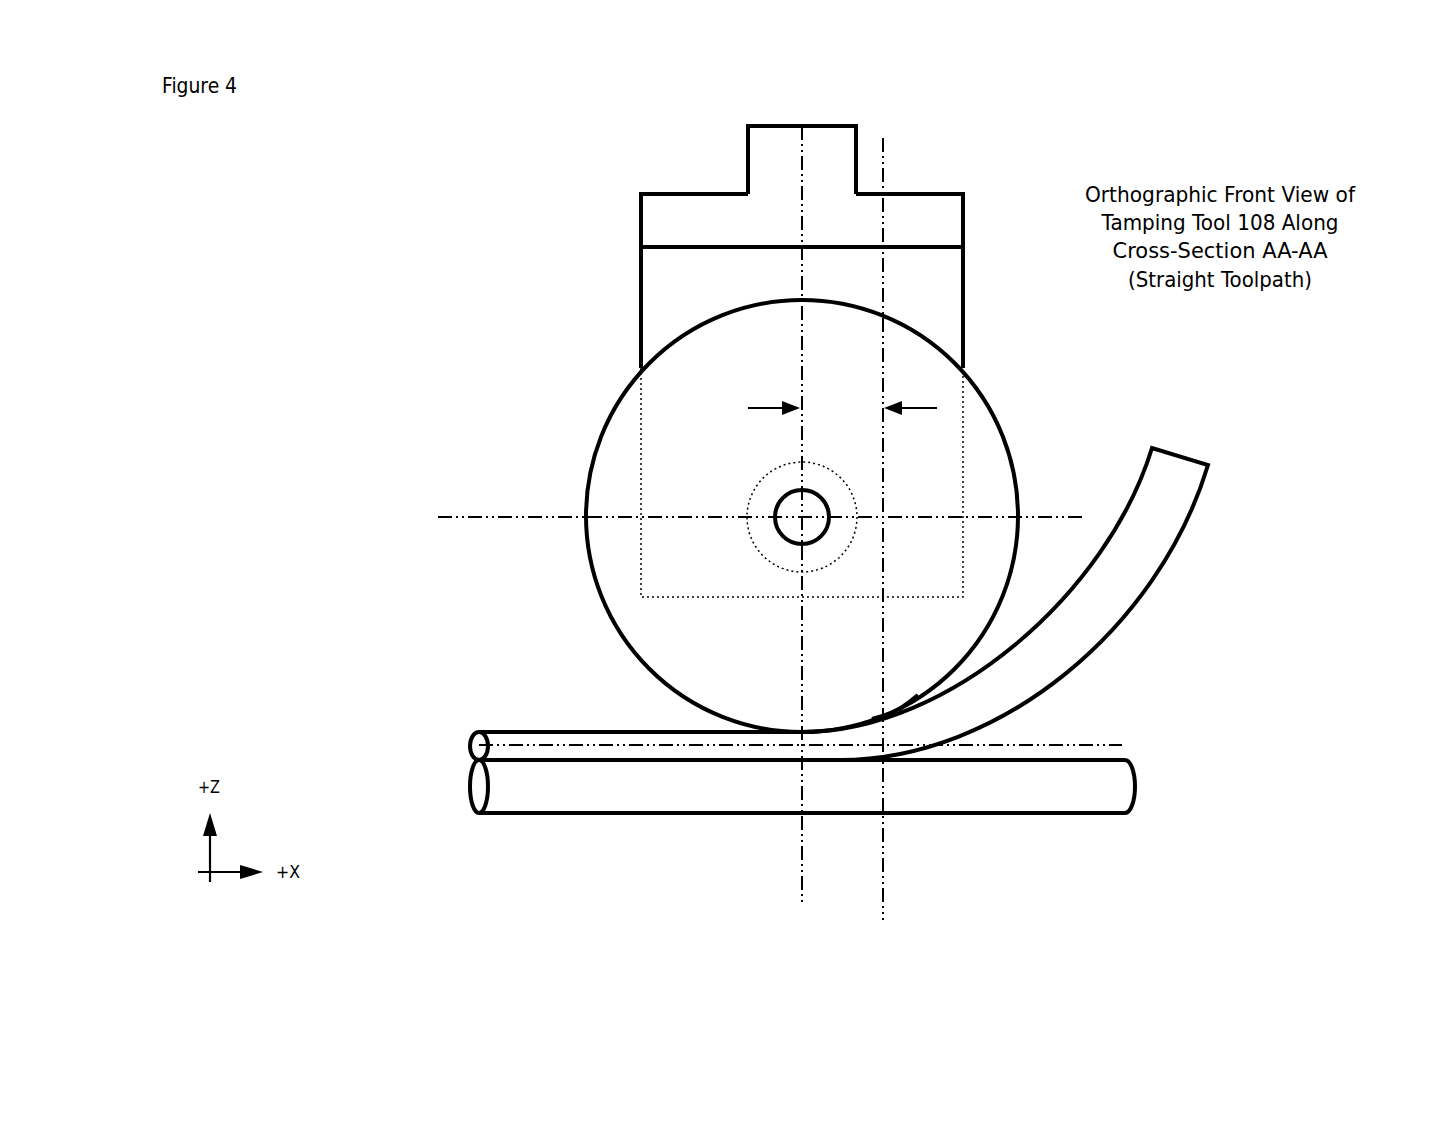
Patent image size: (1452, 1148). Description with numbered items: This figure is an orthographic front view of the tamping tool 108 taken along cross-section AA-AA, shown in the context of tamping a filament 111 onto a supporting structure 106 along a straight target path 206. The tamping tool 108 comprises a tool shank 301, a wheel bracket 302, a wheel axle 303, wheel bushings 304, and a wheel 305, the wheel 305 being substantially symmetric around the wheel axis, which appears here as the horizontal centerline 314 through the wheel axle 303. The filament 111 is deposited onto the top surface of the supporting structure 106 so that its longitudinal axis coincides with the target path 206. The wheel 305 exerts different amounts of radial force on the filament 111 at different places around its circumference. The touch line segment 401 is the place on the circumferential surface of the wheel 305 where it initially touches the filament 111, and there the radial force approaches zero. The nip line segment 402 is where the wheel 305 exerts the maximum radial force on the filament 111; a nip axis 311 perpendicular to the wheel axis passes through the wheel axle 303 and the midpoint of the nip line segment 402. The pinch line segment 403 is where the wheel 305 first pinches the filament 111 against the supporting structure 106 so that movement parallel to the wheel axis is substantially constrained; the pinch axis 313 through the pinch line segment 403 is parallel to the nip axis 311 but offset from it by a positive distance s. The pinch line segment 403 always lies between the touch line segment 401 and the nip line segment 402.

The tamping tool 108 is at (945, 478).
The tool shank 301 is at (674, 147).
The wheel bracket 302 is at (728, 395).
The wheel axle 303 is at (661, 511).
The wheel bushings 304 is at (675, 537).
The wheel 305 is at (755, 516).
The roller axis 314 is at (726, 497).
The nip axis 311 is at (798, 867).
The pinch axis 313 is at (886, 867).
The supporting structure 106 is at (761, 813).
The target path 206 is at (821, 726).
The filament 111 is at (839, 604).
The touch line segment 401 is at (833, 675).
The nip line segment 402 is at (653, 686).
The pinch line segment 403 is at (820, 700).